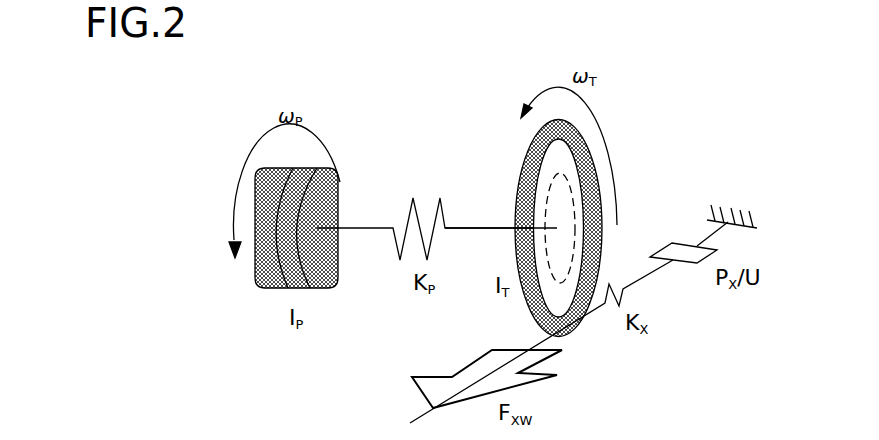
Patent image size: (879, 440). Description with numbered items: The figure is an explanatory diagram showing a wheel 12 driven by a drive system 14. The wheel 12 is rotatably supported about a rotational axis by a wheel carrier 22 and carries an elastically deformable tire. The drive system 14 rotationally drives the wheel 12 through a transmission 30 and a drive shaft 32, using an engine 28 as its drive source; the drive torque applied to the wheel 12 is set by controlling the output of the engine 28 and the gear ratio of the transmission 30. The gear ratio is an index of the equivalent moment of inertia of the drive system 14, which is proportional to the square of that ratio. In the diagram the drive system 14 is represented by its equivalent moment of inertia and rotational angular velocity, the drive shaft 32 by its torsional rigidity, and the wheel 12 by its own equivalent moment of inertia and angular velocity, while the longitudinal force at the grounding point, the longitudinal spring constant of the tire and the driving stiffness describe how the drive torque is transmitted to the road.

The wheel 12 is at (595, 160).
The drive system 14 is at (263, 180).
The wheel carrier 22 is at (582, 243).
The engine 28 is at (262, 278).
The transmission 30 is at (330, 277).
The drive shaft 32 is at (440, 198).